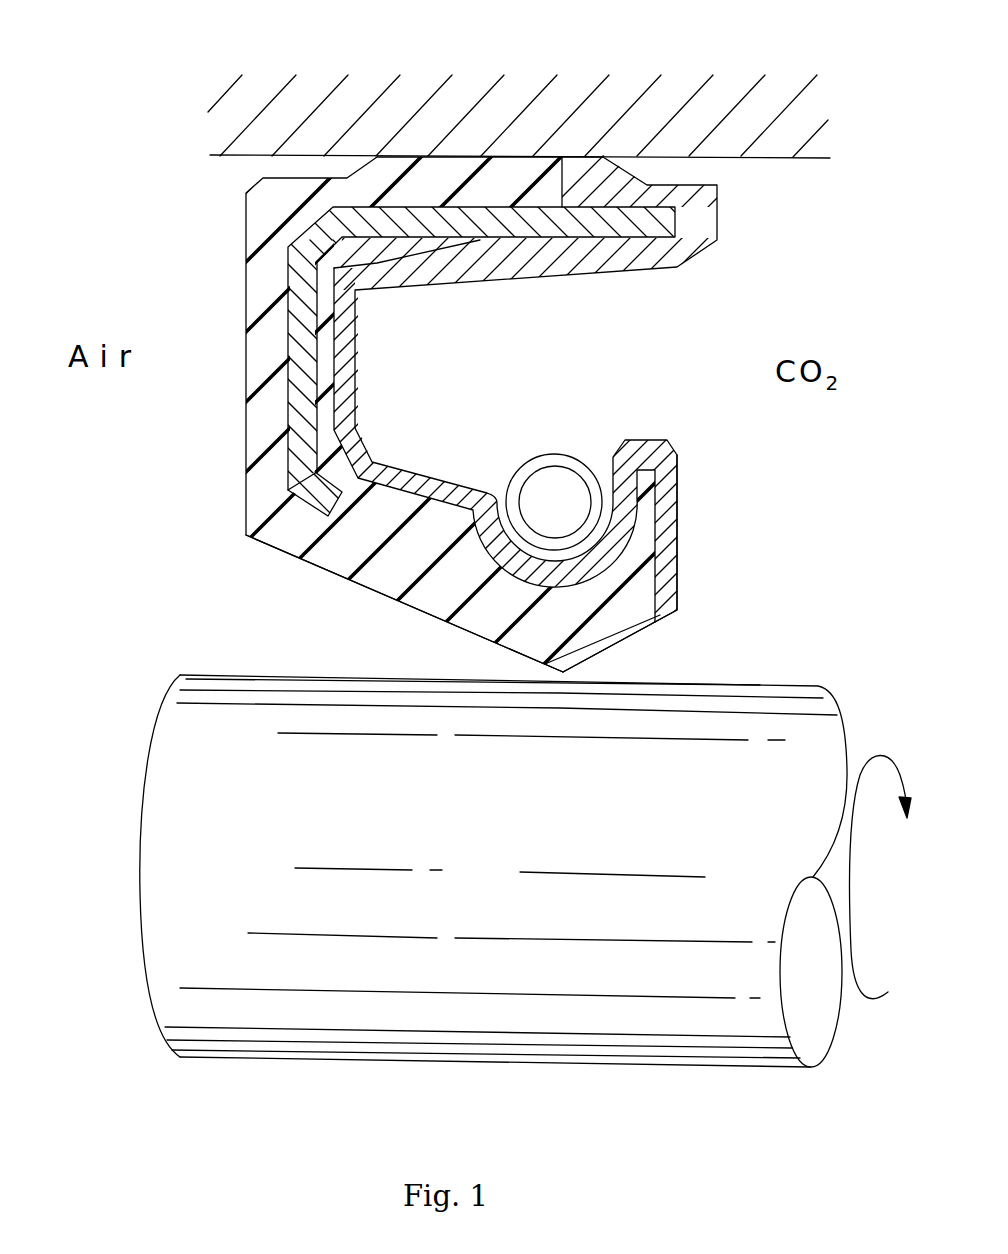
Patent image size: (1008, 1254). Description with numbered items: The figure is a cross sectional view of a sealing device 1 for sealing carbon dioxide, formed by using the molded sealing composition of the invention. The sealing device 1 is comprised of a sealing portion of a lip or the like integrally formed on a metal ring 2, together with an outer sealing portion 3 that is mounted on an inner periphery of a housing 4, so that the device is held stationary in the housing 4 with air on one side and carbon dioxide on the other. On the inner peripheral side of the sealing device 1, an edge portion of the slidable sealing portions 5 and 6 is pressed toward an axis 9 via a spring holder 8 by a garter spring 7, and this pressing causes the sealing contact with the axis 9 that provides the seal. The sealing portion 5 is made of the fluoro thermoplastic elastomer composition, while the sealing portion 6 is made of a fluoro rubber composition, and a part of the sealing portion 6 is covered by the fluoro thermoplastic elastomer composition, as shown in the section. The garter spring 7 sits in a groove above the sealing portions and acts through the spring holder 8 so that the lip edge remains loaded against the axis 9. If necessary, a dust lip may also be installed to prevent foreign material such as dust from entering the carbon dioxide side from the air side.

The sealing device 1 is at (224, 341).
The metal ring 2 is at (305, 300).
The outer sealing portion 3 is at (453, 175).
The housing 4 is at (257, 152).
The sealing portion 5 is at (617, 637).
The sealing portion 6 is at (395, 575).
The garter spring 7 is at (548, 462).
The spring holder 8 is at (615, 535).
The axis 9 is at (190, 780).